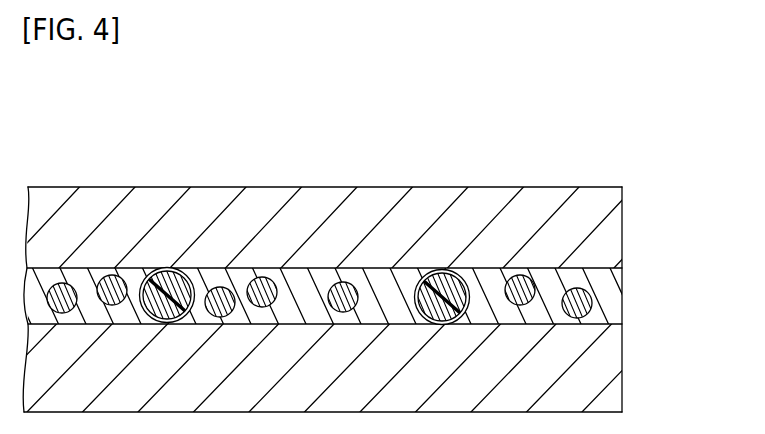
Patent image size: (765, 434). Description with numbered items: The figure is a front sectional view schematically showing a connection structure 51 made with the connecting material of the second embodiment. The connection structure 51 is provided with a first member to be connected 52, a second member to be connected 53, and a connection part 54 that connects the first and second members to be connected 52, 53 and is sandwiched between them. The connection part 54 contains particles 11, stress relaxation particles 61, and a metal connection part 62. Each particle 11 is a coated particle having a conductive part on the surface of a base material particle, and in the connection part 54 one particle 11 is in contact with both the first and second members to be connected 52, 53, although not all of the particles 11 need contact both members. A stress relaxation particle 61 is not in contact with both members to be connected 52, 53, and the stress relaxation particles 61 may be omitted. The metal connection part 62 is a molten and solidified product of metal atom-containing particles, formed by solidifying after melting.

The connection structure 51 is at (105, 136).
The first member to be connected 52 is at (620, 368).
The second member to be connected 53 is at (620, 228).
The connection part 54 is at (364, 221).
The stress relaxation particle 61 is at (263, 277).
The particle 11 is at (442, 269).
The metal connection part 62 is at (562, 268).